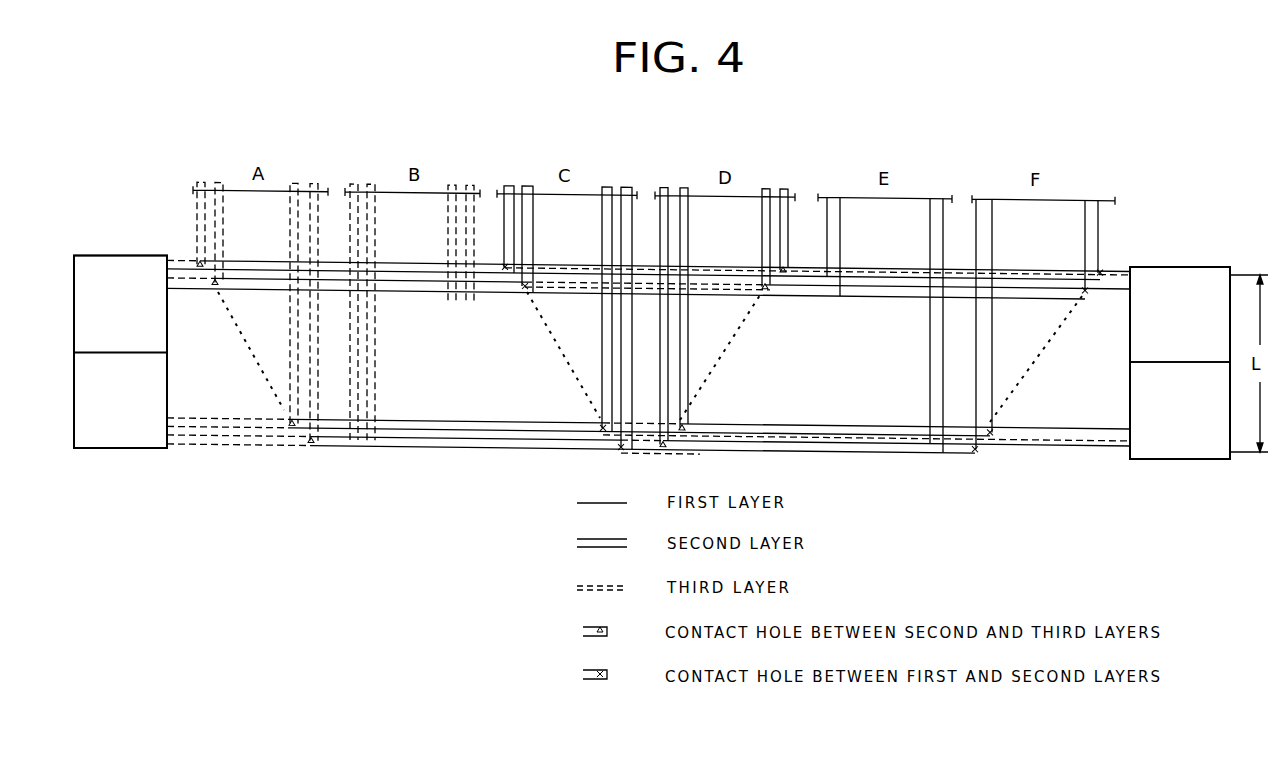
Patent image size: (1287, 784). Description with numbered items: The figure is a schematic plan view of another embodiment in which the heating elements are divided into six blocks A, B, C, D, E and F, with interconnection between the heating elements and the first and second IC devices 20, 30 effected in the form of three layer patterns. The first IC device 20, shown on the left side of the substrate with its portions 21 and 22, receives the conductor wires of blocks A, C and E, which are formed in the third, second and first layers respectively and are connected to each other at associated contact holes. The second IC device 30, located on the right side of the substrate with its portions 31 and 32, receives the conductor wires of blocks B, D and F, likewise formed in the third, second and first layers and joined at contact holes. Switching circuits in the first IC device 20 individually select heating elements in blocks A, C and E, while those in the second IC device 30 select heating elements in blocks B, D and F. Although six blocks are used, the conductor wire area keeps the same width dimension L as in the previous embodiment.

The first IC device 20 is at (72, 344).
The first circuit block upper portion 21 is at (133, 257).
The first circuit block lower portion 22 is at (107, 450).
The second IC device 30 is at (1118, 360).
The second circuit block upper portion 31 is at (1181, 267).
The second circuit block lower portion 32 is at (1161, 460).